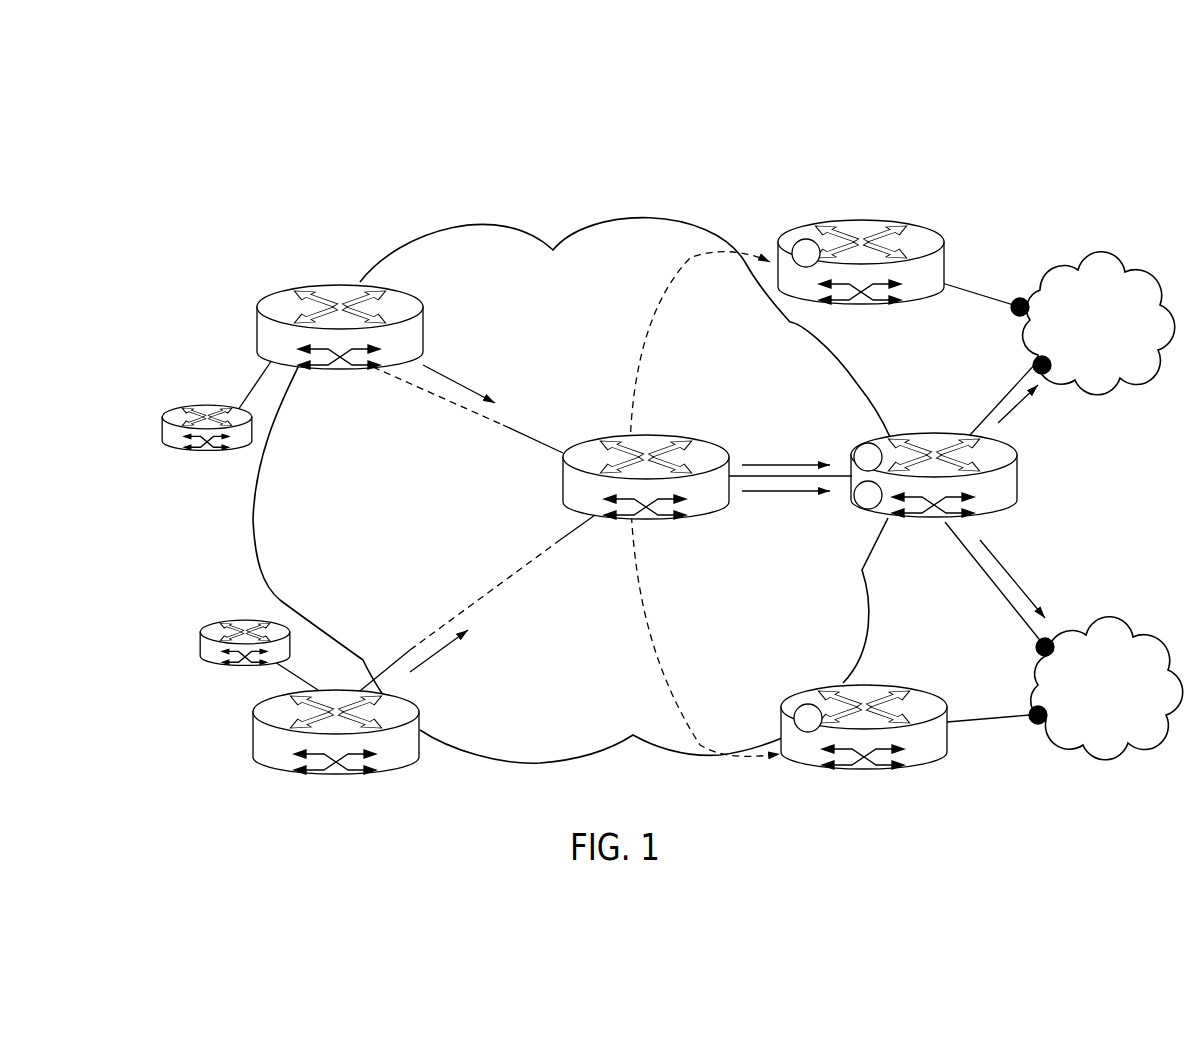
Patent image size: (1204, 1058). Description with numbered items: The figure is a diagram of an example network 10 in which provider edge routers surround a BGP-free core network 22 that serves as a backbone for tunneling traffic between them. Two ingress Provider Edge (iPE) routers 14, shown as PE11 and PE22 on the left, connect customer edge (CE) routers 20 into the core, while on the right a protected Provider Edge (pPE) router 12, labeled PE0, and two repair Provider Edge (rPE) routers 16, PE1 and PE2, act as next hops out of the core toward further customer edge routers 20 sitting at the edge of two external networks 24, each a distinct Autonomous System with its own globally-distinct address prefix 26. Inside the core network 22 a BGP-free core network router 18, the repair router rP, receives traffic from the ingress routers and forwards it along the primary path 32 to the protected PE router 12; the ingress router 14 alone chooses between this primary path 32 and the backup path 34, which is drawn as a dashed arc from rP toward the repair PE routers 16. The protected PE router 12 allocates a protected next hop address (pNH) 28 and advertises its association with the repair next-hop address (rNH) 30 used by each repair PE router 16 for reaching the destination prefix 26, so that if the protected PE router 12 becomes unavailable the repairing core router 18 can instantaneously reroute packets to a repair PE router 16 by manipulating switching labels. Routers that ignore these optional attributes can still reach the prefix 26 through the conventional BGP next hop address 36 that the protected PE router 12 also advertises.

The network 10 is at (457, 201).
The protected Provider Edge (pPE) router 12 is at (1007, 513).
The ingress Provider Edge (iPE) router 14 is at (280, 288).
The repair Provider Edge (rPE) router 16 is at (940, 233).
The BGP-free core network router 18 is at (690, 520).
The customer edge (CE) router 20 is at (202, 453).
The BGP-free core network 22 is at (396, 519).
The external network 24 is at (1137, 278).
The address prefix 26 is at (1097, 413).
The protected next hop address (pNH) 28 is at (860, 443).
The repair next-hop address (rNH) 30 is at (785, 773).
The primary path 32 is at (755, 463).
The backup path 34 is at (640, 355).
The conventional BGP next hop address 36 is at (866, 509).